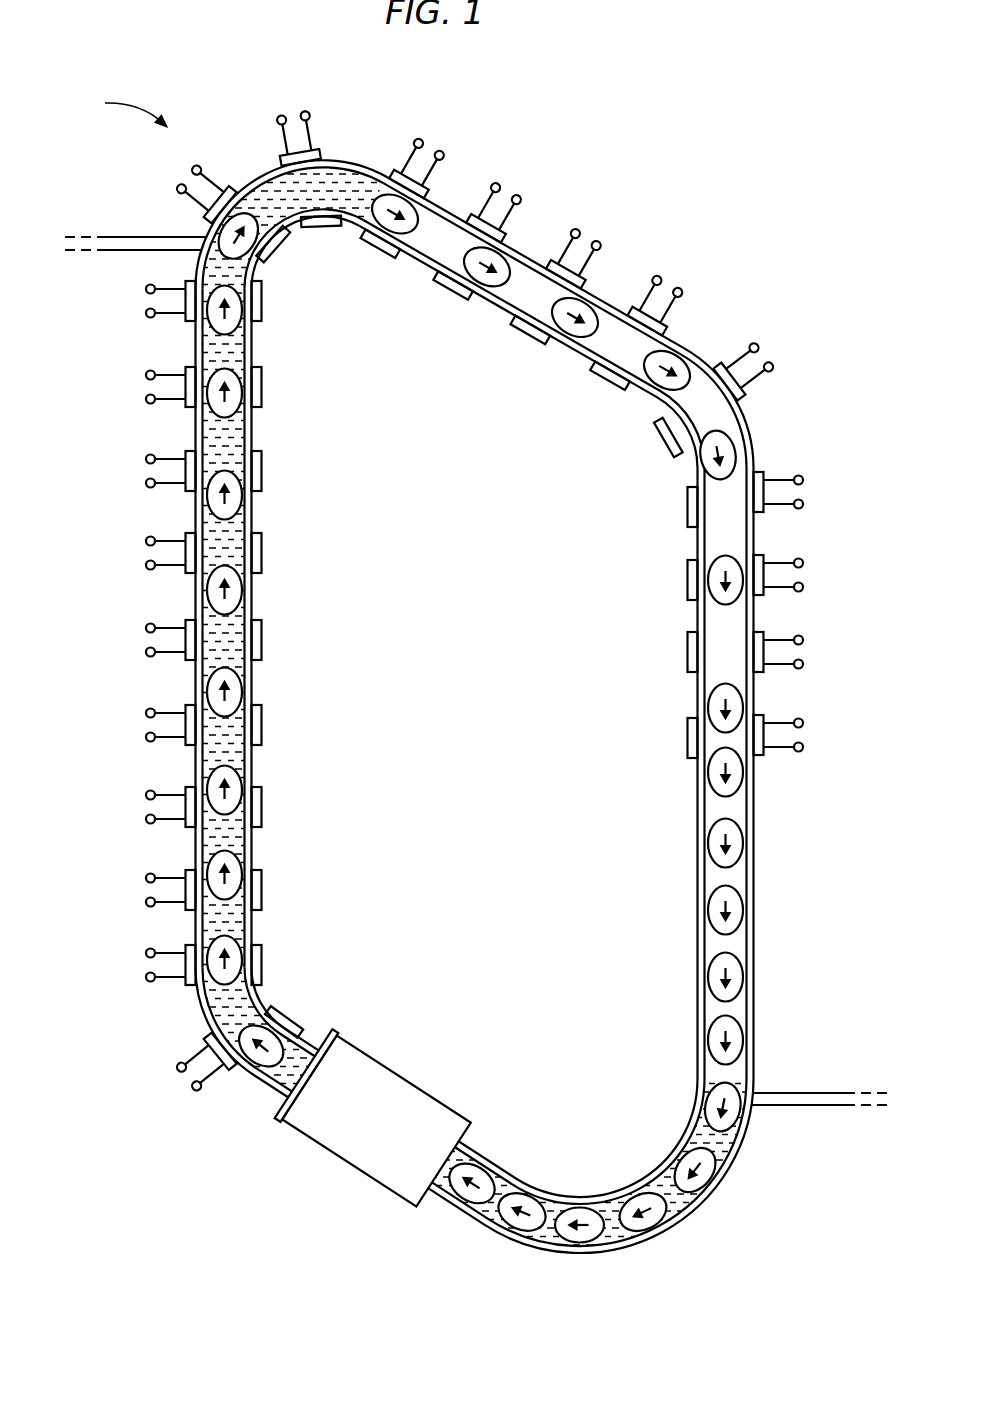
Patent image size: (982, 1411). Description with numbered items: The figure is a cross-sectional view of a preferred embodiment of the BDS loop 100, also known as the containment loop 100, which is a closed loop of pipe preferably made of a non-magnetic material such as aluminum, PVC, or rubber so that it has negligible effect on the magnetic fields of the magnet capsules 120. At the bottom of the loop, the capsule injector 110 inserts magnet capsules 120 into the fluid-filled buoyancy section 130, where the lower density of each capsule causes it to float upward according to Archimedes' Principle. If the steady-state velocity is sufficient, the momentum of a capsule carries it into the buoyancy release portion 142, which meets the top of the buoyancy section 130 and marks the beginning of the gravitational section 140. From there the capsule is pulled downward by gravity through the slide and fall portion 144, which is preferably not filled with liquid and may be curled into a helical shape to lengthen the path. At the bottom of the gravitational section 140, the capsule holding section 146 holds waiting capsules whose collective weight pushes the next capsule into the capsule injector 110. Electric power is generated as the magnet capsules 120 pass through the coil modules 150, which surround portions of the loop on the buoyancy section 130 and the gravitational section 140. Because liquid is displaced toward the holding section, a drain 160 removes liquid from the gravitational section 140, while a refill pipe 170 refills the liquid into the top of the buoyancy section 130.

The BDS loop 100 is at (109, 106).
The capsule injector 110 is at (347, 1167).
The magnet capsules 120 is at (233, 688).
The buoyancy section 130 is at (192, 507).
The gravitational section 140 is at (740, 438).
The buoyancy release portion 142 is at (292, 230).
The slide and fall portion 144 is at (668, 684).
The capsule holding section 146 is at (653, 723).
The coil modules 150 is at (190, 348).
The drain 160 is at (788, 1108).
The refill pipe 170 is at (127, 223).